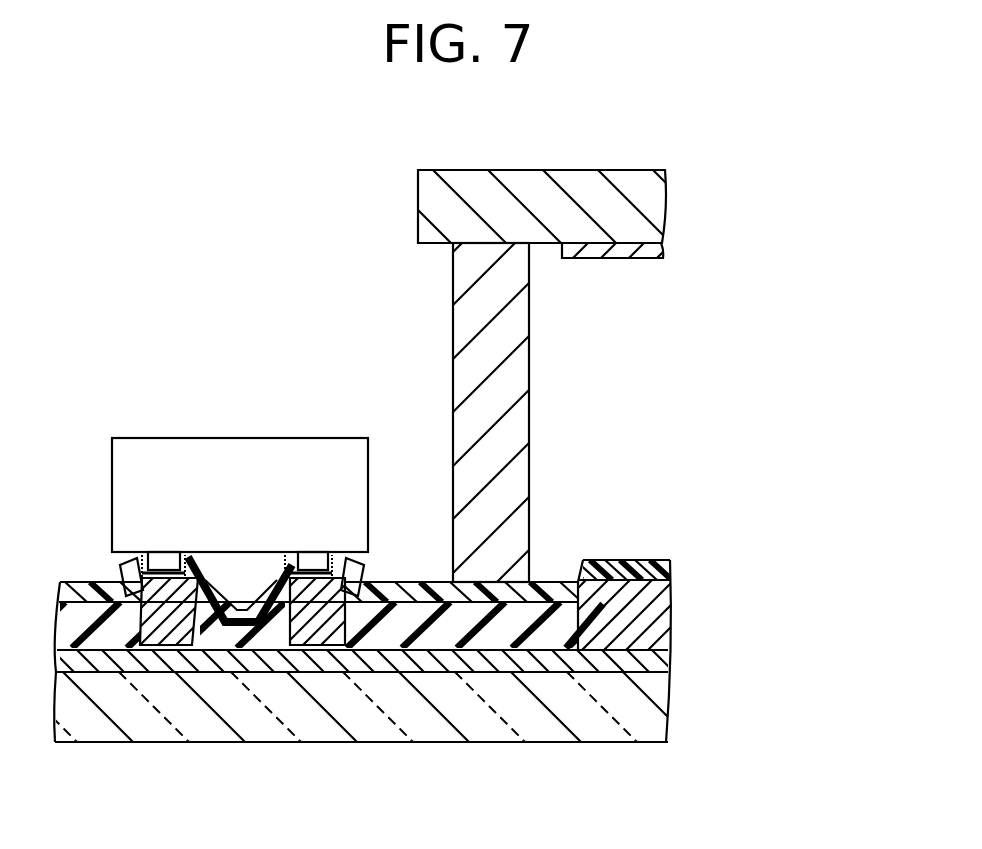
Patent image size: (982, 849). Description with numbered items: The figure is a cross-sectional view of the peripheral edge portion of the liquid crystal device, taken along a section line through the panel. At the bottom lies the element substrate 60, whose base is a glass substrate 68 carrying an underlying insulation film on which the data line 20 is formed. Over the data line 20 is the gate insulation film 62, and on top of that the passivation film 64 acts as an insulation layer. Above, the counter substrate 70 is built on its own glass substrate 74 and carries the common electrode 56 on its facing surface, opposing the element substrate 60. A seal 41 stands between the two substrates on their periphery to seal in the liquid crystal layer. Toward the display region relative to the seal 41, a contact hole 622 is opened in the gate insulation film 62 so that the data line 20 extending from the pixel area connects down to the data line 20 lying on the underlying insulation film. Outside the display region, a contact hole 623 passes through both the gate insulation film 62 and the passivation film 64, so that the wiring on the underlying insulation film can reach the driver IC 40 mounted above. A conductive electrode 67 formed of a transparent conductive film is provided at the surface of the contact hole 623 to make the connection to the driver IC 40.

The data line 20 is at (628, 580).
The driver IC 40 is at (238, 437).
The seal 41 is at (517, 387).
The common electrode 56 is at (652, 251).
The element substrate 60 is at (806, 652).
The gate insulation film 62 is at (660, 633).
The passivation film 64 is at (668, 573).
The conductive electrode 67 is at (120, 566).
The glass substrate 68 is at (655, 705).
The counter substrate 70 is at (806, 263).
The glass substrate 74 is at (646, 200).
The contact hole 622 is at (645, 548).
The contact hole 623 is at (170, 640).